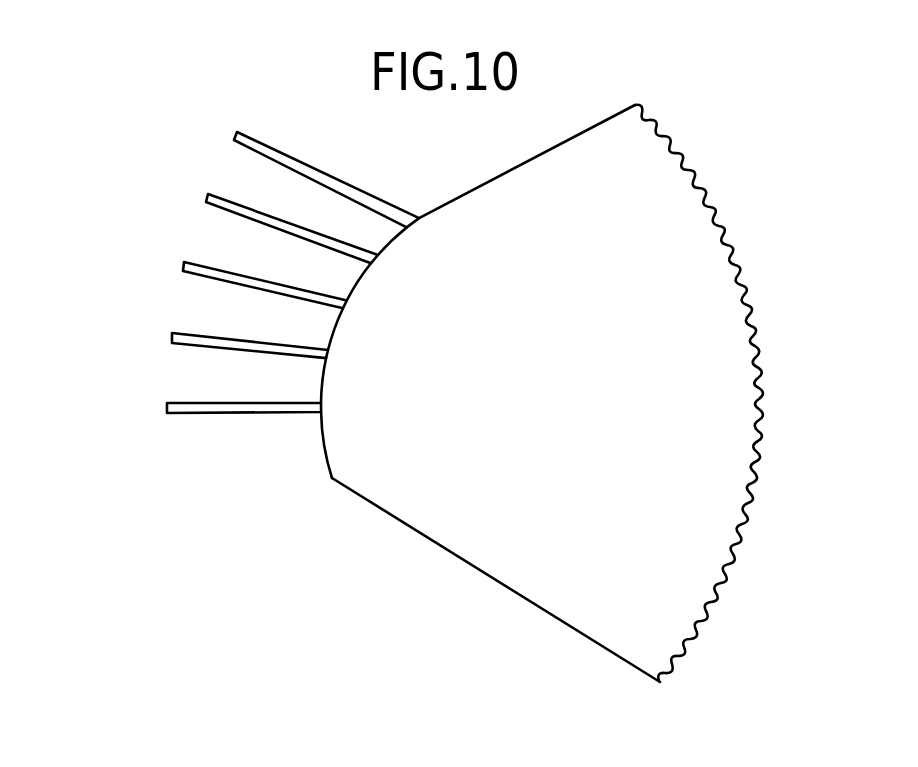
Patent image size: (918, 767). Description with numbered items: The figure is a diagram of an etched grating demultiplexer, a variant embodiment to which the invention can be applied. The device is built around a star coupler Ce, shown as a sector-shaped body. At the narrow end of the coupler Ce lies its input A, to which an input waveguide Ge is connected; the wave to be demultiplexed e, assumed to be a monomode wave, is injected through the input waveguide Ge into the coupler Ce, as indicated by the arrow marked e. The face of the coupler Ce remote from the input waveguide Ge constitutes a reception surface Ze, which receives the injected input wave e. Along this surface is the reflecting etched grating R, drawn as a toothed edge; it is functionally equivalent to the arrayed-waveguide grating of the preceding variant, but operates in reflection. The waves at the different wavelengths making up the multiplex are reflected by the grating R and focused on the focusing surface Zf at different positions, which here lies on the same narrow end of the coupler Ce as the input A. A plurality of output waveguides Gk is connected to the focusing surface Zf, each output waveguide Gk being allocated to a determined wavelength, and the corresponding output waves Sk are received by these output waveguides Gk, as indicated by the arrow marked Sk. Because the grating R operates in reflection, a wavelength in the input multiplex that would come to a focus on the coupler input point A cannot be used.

The output waveguide Gk is at (224, 206).
The output wave Sk is at (195, 190).
The input wave e is at (167, 263).
The input waveguide Ge is at (215, 276).
The focusing surface Zf is at (360, 282).
The coupler input point A is at (346, 306).
The star coupler Ce is at (443, 503).
The reception surface Ze is at (732, 555).
The reflecting etched grating R is at (752, 330).